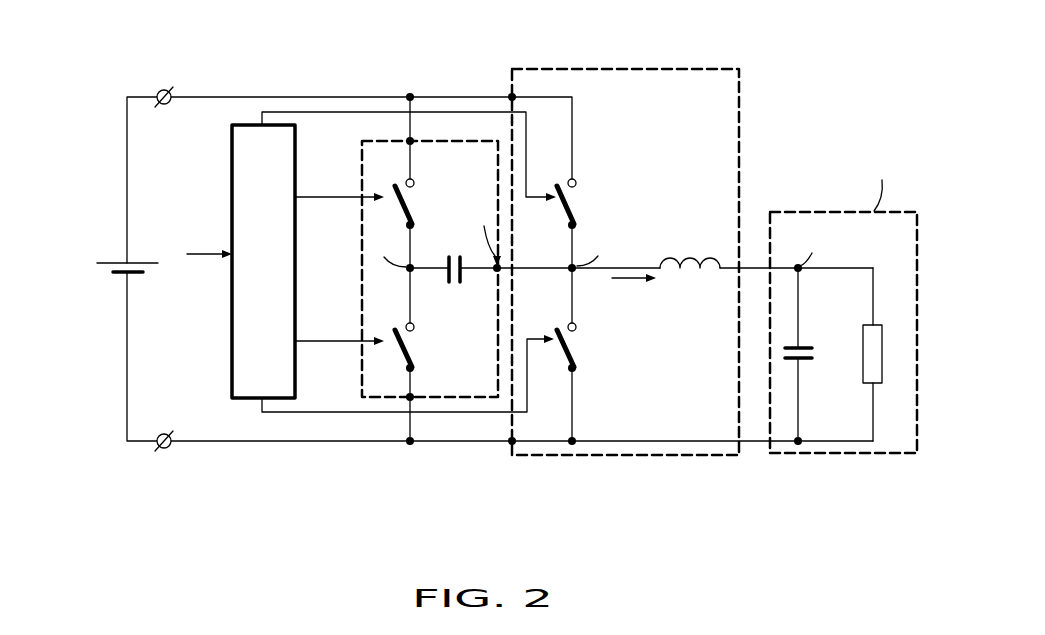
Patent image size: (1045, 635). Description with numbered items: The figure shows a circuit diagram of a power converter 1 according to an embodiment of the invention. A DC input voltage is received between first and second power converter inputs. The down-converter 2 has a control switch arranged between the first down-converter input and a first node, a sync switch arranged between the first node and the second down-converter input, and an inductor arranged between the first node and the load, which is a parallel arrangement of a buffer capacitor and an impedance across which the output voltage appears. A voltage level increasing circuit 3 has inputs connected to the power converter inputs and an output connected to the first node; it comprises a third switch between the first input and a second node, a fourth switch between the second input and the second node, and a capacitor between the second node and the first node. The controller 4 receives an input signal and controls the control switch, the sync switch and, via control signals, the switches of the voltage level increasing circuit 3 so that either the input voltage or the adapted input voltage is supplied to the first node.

The power converter 1 is at (816, 92).
The down-converter 2 is at (708, 67).
The voltage level increasing circuit 3 is at (468, 140).
The controller 4 is at (296, 130).